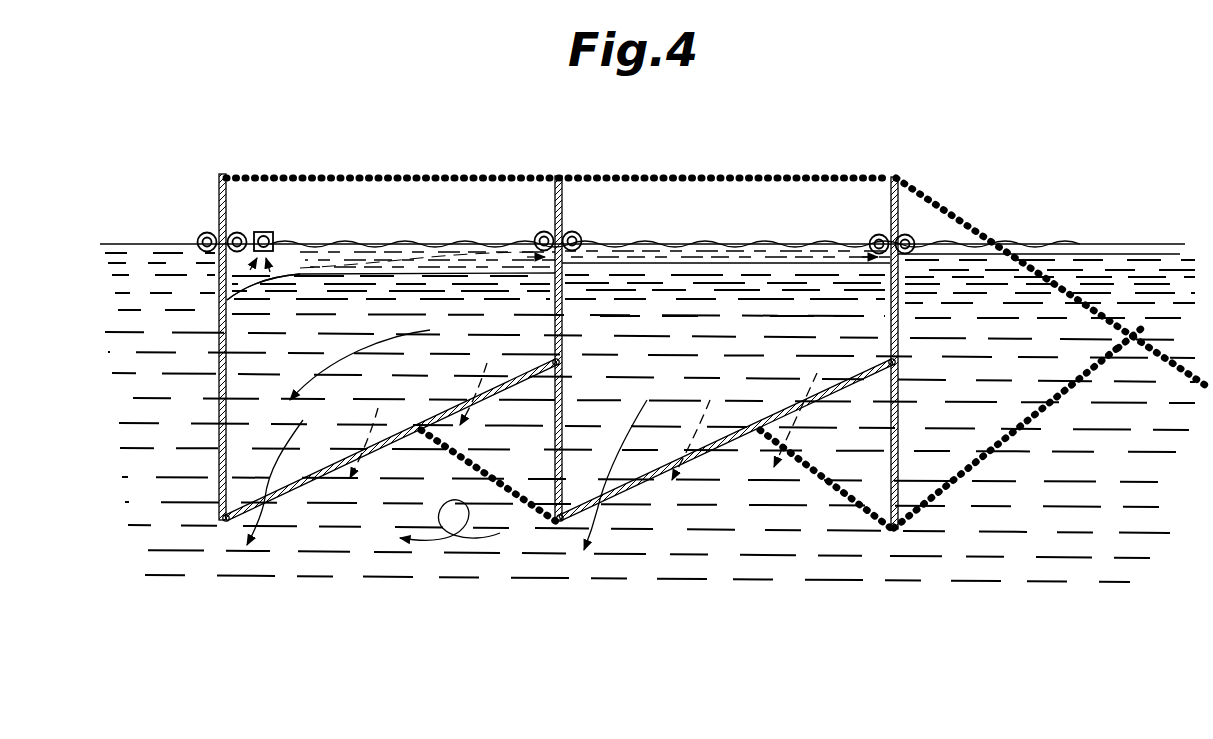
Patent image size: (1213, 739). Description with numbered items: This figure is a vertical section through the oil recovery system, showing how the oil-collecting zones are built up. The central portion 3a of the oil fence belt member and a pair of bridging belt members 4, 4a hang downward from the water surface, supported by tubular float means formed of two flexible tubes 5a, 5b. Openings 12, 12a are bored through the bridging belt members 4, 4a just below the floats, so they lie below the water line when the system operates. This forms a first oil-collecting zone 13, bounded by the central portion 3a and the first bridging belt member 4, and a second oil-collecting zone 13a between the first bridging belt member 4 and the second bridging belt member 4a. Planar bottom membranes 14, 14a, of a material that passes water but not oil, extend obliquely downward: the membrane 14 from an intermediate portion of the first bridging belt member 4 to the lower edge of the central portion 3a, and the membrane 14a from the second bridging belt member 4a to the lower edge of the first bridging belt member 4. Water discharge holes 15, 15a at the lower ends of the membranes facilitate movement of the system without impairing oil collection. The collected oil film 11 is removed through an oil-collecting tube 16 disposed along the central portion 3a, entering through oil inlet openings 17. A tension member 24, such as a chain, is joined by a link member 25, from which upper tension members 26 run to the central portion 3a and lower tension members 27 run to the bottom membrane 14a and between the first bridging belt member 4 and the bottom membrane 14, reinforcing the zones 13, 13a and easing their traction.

The central portion of the oil fence belt member 3a is at (218, 217).
The first bridging belt member 4 is at (563, 217).
The second bridging belt member 4a is at (898, 222).
The flexible tube 5a is at (197, 238).
The flexible tube 5b is at (239, 233).
The oil film 11 is at (433, 246).
The openings 12 is at (562, 262).
The openings 12a is at (898, 264).
The first oil-collecting zone 13 is at (395, 418).
The second oil-collecting zone 13a is at (740, 317).
The bottom membrane 14 is at (398, 435).
The bottom membrane 14a is at (717, 453).
The water discharge holes 15 is at (265, 498).
The water discharge holes 15a is at (600, 499).
The oil-collecting tube 16 is at (268, 232).
The oil inlet openings 17 is at (280, 245).
The tension member 24 is at (1158, 355).
The link member 25 is at (1135, 340).
The upper tension members 26 is at (720, 178).
The lower tension members 27 is at (530, 507).